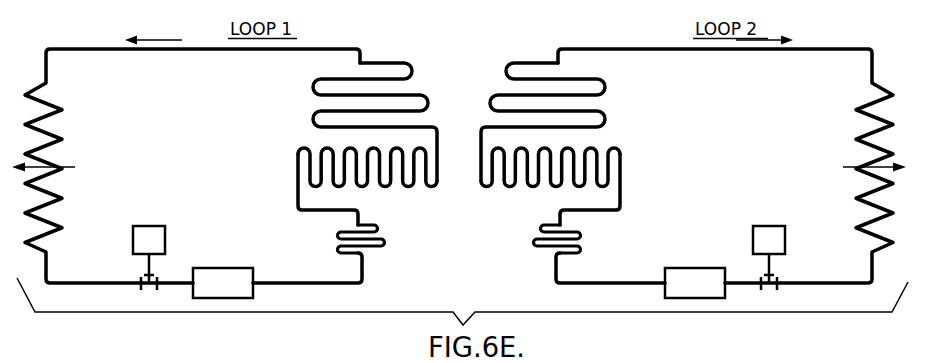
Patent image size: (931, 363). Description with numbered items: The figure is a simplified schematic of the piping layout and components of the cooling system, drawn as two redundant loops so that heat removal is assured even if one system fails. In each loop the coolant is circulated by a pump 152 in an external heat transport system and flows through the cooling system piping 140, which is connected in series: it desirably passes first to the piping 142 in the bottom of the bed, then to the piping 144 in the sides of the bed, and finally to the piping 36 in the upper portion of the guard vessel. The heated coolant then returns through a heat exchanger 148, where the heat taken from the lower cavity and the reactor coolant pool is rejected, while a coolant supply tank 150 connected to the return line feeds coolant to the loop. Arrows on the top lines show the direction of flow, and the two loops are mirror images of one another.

The cooling system piping 140 is at (100, 49).
The piping in the upper portion of the guard vessel 36 is at (314, 80).
The piping in the sides of the bed 144 is at (298, 166).
The piping in the bottom of the bed 142 is at (385, 245).
The heat exchanger 148 is at (62, 132).
The coolant supply tank 150 is at (165, 242).
The pump 152 is at (250, 273).